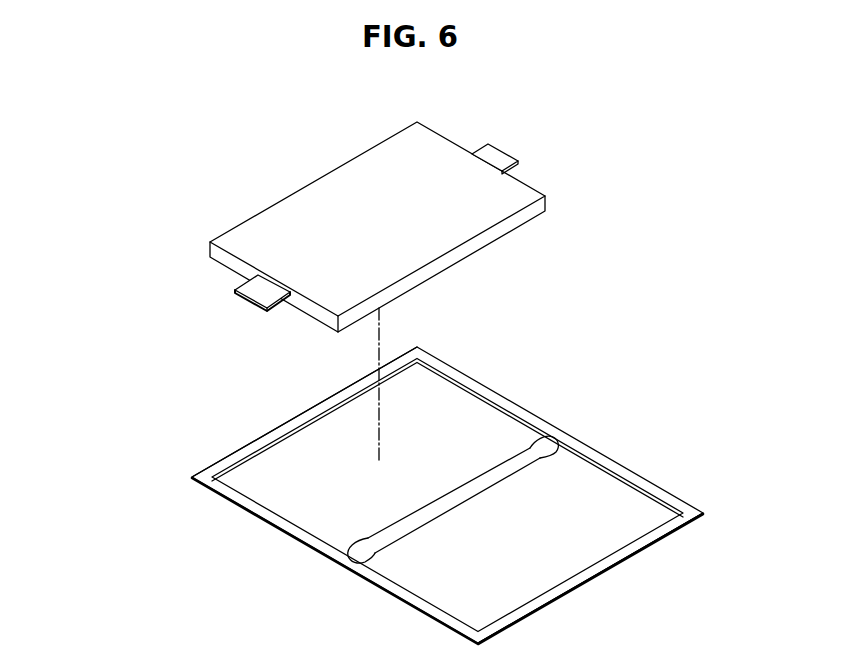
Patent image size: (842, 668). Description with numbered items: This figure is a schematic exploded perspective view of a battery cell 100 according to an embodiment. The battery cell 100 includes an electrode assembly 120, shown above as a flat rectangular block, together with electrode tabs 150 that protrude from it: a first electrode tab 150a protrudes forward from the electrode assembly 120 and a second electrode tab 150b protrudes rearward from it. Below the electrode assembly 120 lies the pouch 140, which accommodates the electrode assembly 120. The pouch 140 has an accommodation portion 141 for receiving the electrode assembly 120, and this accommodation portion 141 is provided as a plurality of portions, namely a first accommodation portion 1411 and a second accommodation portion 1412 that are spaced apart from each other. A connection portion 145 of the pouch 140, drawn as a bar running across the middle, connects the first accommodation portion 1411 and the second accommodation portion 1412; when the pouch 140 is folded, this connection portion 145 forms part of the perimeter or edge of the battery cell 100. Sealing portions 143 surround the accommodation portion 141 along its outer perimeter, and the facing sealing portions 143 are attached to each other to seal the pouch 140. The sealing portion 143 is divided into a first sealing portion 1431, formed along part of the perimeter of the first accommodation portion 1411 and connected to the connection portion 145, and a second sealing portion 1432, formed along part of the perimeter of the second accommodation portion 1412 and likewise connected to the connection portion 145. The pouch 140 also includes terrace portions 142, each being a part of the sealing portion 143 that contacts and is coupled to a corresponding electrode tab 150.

The battery cell 100 is at (153, 118).
The electrode assembly 120 is at (330, 181).
The electrode tabs 150 is at (350, 219).
The first electrode tab 150a is at (250, 298).
The second electrode tab 150b is at (498, 158).
The pouch 140 is at (410, 496).
The terrace portion 142 is at (422, 603).
The sealing portions 143 is at (447, 495).
The first sealing portion 1431 is at (295, 420).
The second sealing portion 1432 is at (555, 593).
The accommodation portion 141 is at (447, 485).
The first accommodation portion 1411 is at (467, 417).
The second accommodation portion 1412 is at (557, 475).
The connection portion 145 is at (377, 541).